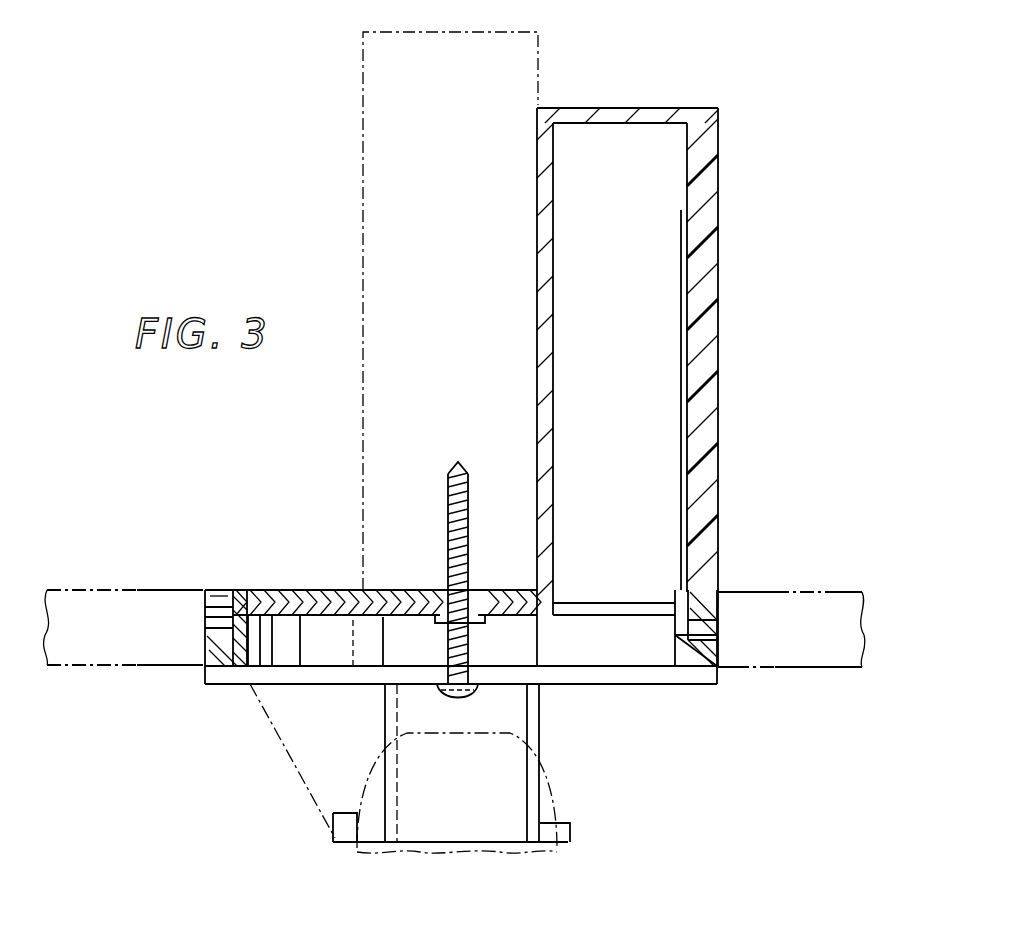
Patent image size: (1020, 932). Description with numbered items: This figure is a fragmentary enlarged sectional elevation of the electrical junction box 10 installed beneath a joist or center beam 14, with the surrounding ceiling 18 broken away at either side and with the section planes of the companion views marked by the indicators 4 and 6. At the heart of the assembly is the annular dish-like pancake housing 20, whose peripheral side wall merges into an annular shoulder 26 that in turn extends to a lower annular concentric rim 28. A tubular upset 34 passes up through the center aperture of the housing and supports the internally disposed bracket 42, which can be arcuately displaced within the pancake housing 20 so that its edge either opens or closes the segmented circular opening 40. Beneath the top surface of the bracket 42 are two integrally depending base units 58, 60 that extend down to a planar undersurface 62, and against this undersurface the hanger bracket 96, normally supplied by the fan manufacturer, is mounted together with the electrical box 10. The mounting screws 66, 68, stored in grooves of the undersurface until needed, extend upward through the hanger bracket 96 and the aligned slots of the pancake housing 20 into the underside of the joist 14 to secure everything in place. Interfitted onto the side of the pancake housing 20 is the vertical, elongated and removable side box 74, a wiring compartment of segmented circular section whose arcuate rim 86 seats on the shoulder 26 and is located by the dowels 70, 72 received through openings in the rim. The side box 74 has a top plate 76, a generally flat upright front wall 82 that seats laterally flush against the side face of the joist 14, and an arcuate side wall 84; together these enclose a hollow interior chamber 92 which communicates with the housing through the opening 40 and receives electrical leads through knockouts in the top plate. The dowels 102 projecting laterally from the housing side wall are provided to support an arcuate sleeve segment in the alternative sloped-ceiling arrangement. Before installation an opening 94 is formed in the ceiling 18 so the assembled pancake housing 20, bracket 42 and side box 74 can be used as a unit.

The electrical junction box 10 is at (822, 372).
The joist or center beam 14 is at (503, 76).
The ceiling 18 is at (832, 603).
The pancake housing 20 is at (300, 590).
The annular shoulder 26 is at (212, 630).
The lower annular concentric rim 28 is at (720, 660).
The tubular upset 34 is at (438, 623).
The segmented circular opening 40 is at (598, 590).
The bracket 42 is at (287, 622).
The base unit 58 is at (586, 670).
The base unit 60 is at (525, 645).
The planar undersurface 62 is at (502, 684).
The mounting screw 66 is at (384, 574).
The mounting screw 68 is at (445, 492).
The dowel 70 is at (745, 554).
The dowel 72 is at (737, 592).
The side box 74 is at (803, 263).
The top plate 76 is at (633, 108).
The front wall 82 is at (537, 342).
The arcuate side wall 84 is at (712, 408).
The arcuate rim 86 is at (702, 642).
The hollow interior chamber 92 is at (622, 345).
The opening 94 is at (224, 570).
The hanger bracket 96 is at (540, 733).
The dowels 102 is at (222, 592).
The section line 4- 4 is at (792, 578).
The section line 6- 6 is at (792, 675).